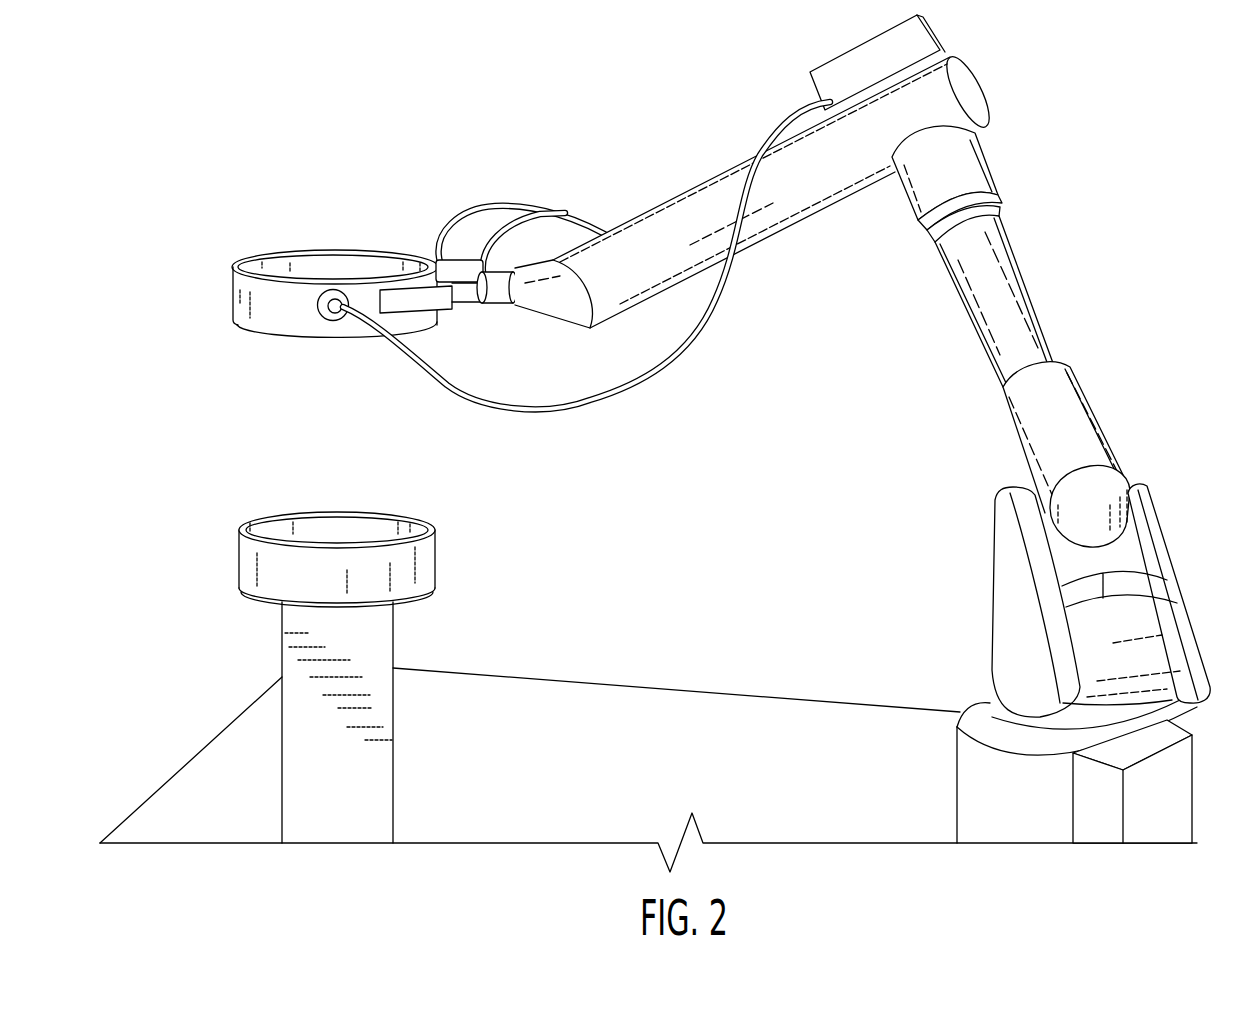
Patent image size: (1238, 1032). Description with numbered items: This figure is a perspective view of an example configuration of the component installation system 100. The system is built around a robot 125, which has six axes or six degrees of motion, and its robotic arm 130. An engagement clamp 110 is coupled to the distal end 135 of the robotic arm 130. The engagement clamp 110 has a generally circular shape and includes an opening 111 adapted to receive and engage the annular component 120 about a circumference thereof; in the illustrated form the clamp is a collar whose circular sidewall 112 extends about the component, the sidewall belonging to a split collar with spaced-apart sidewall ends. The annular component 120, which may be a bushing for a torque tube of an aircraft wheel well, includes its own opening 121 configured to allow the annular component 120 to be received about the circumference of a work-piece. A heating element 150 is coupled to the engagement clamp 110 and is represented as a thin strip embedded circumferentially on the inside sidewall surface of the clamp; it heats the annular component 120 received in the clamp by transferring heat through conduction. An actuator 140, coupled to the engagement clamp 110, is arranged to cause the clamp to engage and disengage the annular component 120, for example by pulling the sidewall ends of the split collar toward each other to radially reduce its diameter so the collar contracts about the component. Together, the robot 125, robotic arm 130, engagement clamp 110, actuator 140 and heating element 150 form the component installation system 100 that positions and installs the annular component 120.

The component installation system 100 is at (188, 98).
The engagement clamp 110 is at (297, 245).
The opening 111 is at (273, 267).
The circular sidewall 112 is at (351, 255).
The annular component 120 is at (316, 507).
The opening 121 is at (410, 527).
The robot 125 is at (1112, 368).
The robotic arm 130 is at (628, 200).
The distal end 135 is at (490, 272).
The actuator 140 is at (453, 258).
The heating element 150 is at (323, 280).